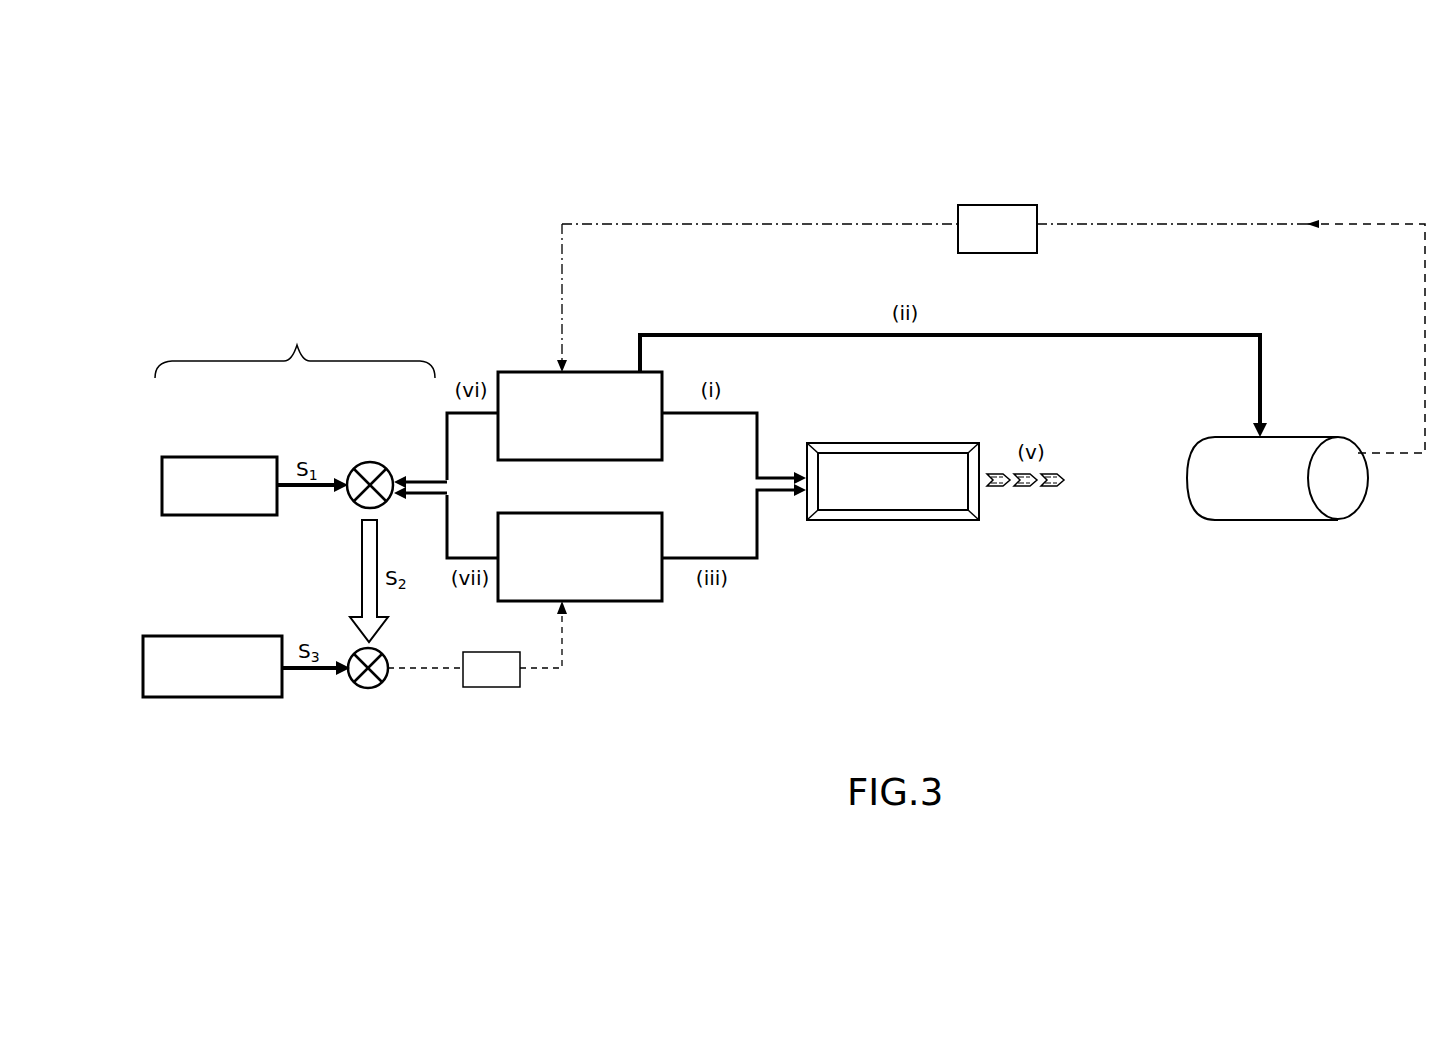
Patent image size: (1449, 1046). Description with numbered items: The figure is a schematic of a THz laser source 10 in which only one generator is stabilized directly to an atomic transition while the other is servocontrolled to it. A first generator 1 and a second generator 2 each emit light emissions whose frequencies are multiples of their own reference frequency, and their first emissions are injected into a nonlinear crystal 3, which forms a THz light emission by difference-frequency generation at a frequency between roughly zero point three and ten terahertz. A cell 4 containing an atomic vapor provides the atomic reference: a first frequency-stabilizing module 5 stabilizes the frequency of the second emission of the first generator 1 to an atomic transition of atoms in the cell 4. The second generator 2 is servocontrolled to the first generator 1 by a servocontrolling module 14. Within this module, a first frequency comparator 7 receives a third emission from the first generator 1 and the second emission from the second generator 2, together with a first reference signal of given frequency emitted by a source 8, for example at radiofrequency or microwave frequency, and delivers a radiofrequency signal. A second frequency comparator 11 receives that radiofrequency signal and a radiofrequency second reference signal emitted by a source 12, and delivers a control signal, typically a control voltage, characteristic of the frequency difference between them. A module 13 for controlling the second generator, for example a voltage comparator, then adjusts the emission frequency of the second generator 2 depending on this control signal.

The first generator 1 is at (573, 424).
The second generator 2 is at (573, 570).
The nonlinear crystal 3 is at (886, 493).
The cell 4 is at (1261, 489).
The first frequency-stabilizing module 5 is at (1037, 213).
The first frequency comparator 7 is at (375, 455).
The source 8 is at (212, 497).
The THz laser source 10 is at (1250, 130).
The second frequency comparator 11 is at (377, 698).
The source 12 is at (226, 679).
The module for controlling the second generator 13 is at (500, 687).
The servocontrolling module 14 is at (295, 345).